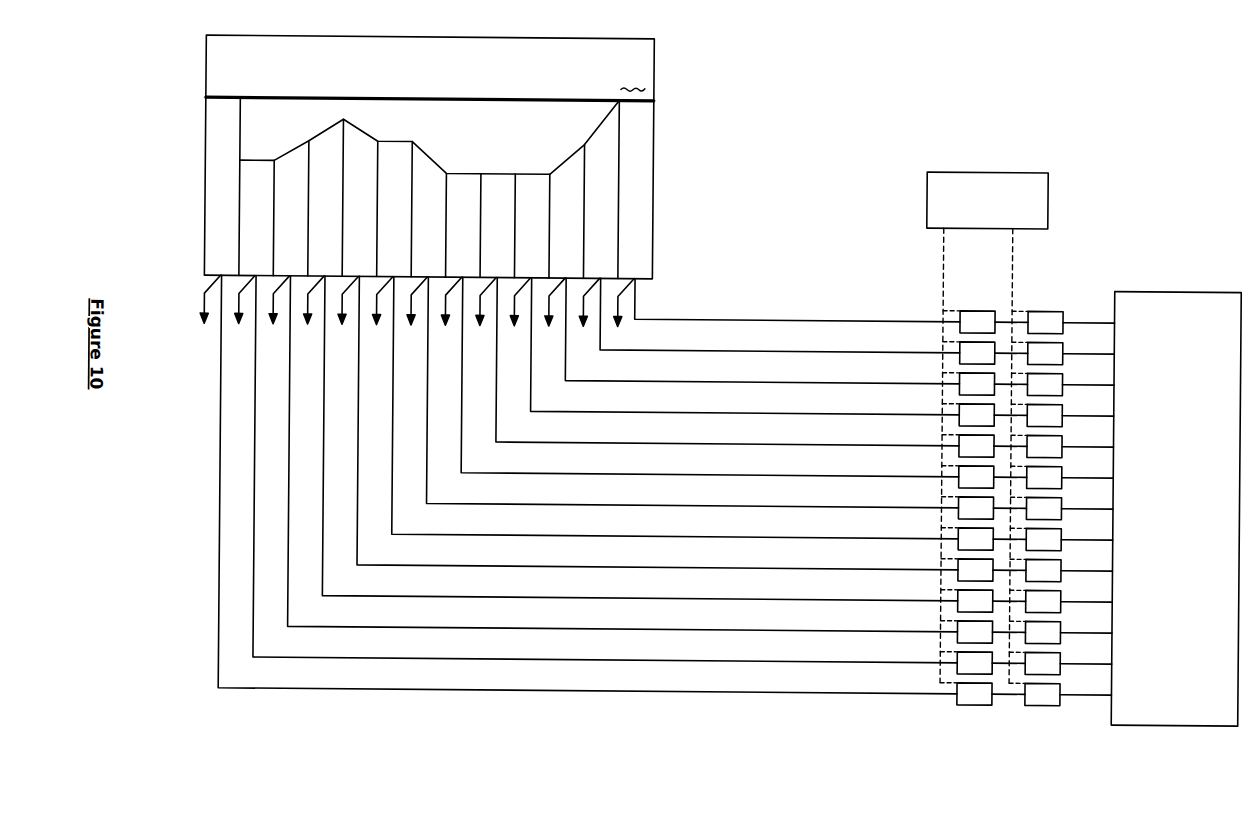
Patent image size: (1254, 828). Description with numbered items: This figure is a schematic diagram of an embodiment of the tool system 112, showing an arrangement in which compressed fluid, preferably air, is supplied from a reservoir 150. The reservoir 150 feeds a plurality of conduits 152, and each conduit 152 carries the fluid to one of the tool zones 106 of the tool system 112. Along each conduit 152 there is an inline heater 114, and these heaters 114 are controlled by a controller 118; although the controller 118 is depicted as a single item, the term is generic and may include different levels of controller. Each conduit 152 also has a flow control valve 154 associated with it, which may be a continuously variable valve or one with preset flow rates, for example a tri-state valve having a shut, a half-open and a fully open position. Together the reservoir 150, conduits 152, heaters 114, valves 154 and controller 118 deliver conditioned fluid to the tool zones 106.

The tool zones 106 is at (641, 76).
The tool system 112 is at (1102, 123).
The inline heater 114 is at (973, 306).
The controller 118 is at (985, 427).
The reservoir 150 is at (1176, 509).
The conduits 152 is at (748, 315).
The flow control valve 154 is at (1046, 306).